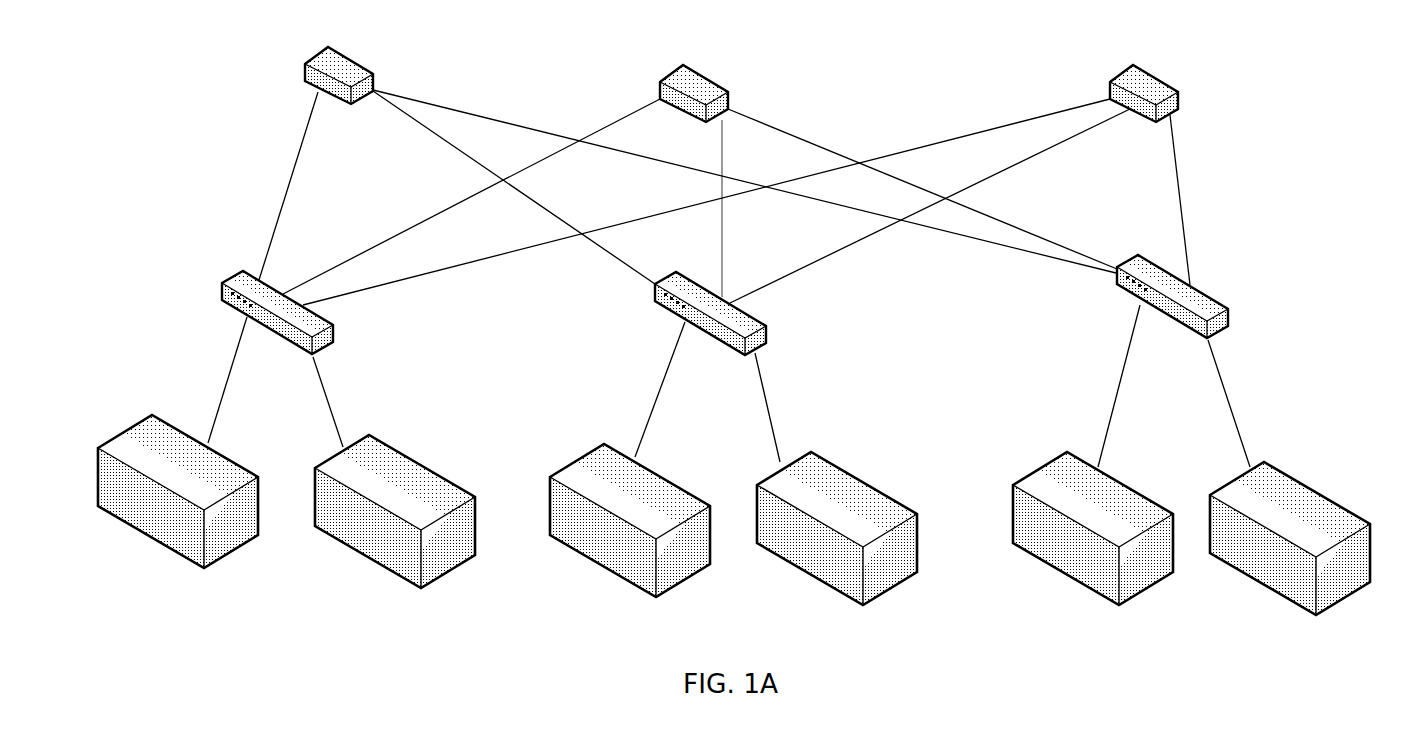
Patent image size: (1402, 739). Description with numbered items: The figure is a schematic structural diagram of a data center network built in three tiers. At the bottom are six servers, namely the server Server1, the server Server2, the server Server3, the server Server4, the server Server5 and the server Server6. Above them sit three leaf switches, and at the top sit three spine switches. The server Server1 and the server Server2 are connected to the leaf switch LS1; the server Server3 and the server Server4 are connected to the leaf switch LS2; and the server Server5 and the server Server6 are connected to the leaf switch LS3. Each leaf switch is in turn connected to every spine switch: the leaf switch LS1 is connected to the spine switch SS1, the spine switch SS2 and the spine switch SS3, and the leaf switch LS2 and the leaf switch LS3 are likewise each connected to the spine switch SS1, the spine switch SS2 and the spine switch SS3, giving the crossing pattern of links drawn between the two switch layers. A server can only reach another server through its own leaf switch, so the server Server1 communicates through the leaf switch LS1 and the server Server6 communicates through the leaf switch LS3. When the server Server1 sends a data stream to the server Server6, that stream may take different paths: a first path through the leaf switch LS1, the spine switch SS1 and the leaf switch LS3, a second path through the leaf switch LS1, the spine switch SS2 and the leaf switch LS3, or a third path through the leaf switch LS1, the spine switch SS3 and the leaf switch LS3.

The spine switch SS1 is at (339, 94).
The spine switch SS2 is at (694, 111).
The spine switch SS3 is at (1144, 110).
The leaf switch LS1 is at (277, 329).
The leaf switch LS2 is at (710, 330).
The leaf switch LS3 is at (1172, 316).
The server Server1 is at (178, 508).
The server Server2 is at (395, 527).
The server Server3 is at (630, 535).
The server Server4 is at (837, 544).
The server Server5 is at (1093, 544).
The server Server6 is at (1290, 555).